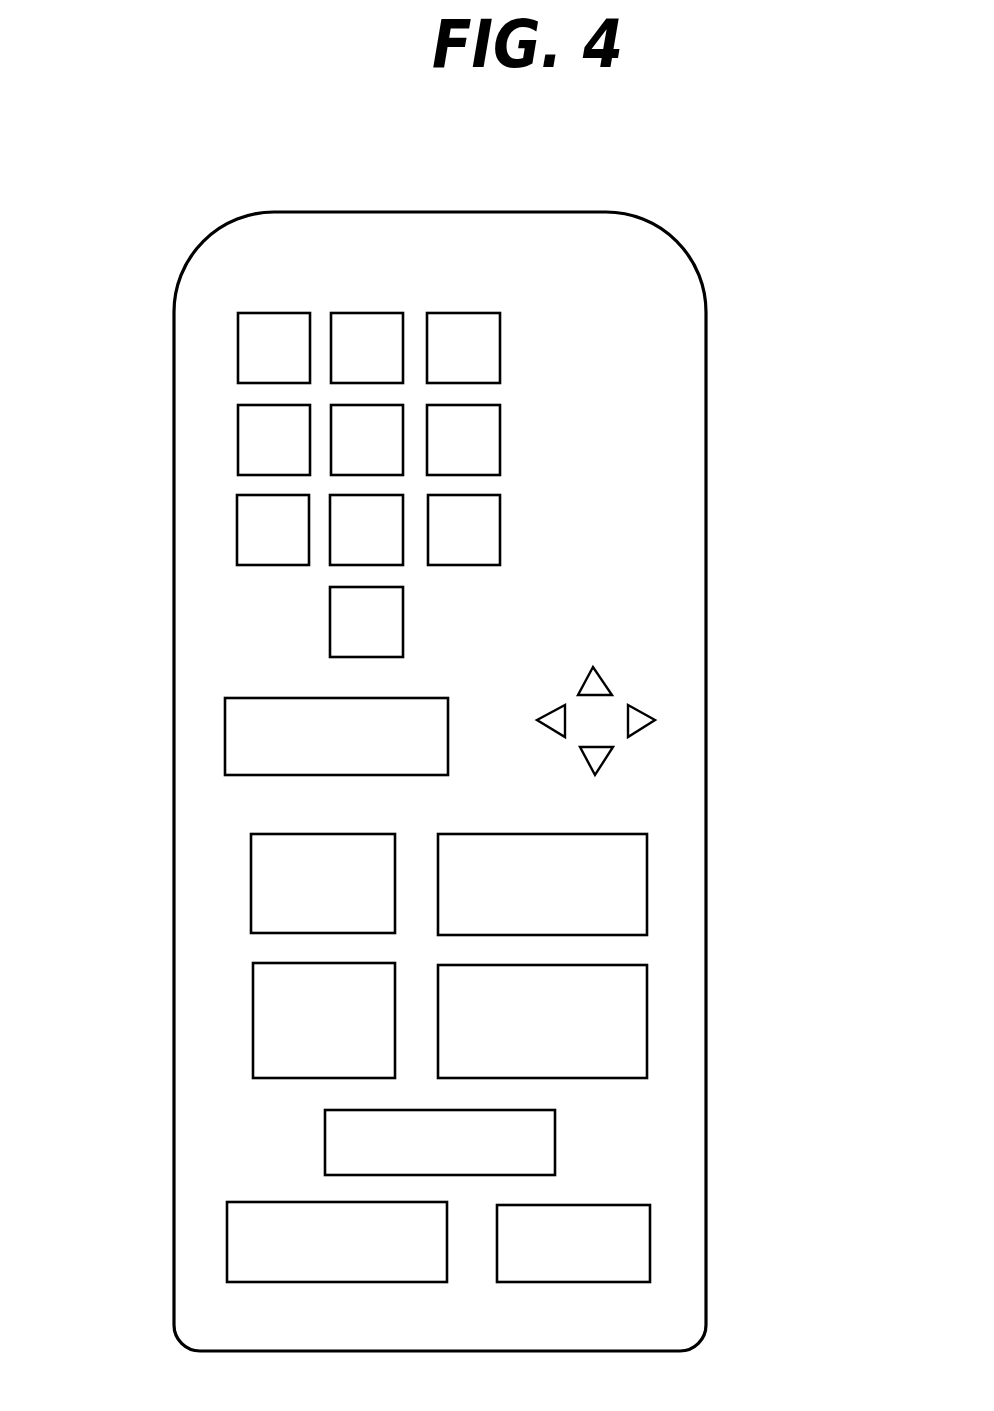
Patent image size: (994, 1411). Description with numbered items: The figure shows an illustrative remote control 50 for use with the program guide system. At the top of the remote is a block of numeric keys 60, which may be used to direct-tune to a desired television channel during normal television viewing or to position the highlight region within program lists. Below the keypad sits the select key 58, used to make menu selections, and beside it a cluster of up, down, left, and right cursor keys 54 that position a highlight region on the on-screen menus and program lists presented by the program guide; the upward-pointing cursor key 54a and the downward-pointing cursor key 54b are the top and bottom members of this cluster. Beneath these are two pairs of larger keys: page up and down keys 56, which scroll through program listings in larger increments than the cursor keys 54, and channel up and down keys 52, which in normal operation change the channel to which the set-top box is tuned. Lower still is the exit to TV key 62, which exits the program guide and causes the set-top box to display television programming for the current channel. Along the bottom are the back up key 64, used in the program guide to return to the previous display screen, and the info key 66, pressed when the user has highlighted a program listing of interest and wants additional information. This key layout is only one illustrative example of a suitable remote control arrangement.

The remote control 50 is at (632, 164).
The channel up and down keys 52 is at (634, 878).
The cursor keys 54 is at (652, 700).
The up arrow button 54a is at (598, 673).
The down arrow button 54b is at (600, 757).
The page up and down keys 56 is at (268, 908).
The select key 58 is at (238, 745).
The numeric keys 60 is at (212, 442).
The exit to TV key 62 is at (325, 1135).
The back up key 64 is at (227, 1236).
The info key 66 is at (640, 1258).